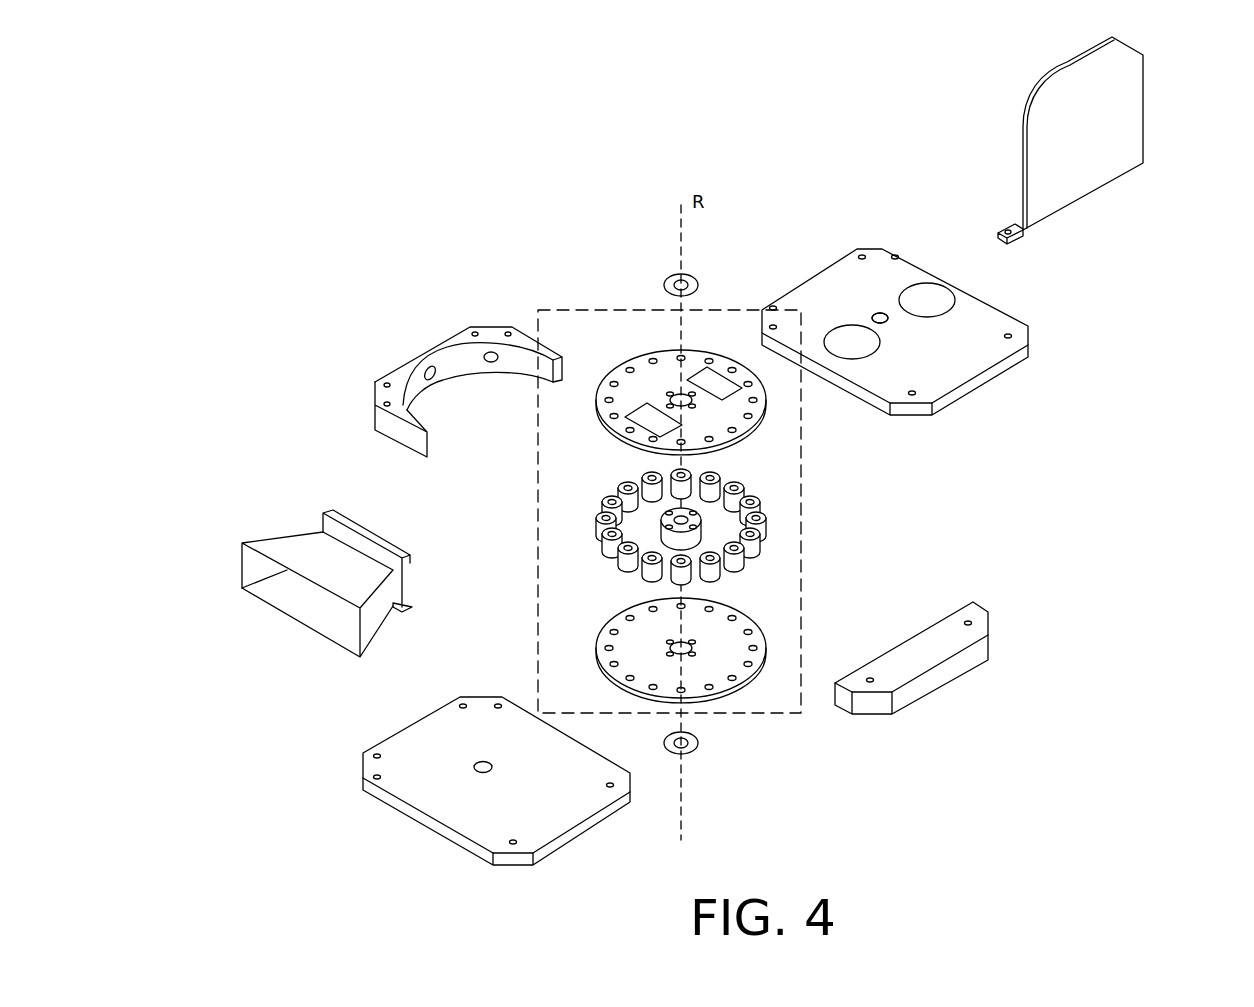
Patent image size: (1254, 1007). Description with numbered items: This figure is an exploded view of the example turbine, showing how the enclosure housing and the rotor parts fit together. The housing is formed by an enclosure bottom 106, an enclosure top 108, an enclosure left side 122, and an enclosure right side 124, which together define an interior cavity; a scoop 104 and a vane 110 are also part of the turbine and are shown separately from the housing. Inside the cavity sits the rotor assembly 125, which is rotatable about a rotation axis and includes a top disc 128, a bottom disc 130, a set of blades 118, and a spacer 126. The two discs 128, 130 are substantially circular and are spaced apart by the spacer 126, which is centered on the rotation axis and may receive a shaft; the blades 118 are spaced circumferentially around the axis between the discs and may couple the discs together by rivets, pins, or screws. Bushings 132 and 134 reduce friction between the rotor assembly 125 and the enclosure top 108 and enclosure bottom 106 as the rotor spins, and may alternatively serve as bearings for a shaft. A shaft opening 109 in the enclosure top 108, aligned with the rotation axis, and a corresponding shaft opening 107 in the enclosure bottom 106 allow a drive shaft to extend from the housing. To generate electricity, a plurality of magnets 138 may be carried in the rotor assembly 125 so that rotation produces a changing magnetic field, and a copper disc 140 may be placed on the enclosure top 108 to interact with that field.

The scoop 104 is at (242, 545).
The enclosure bottom 106 is at (385, 745).
The shaft opening 107 is at (481, 781).
The enclosure top 108 is at (985, 295).
The shaft opening 109 is at (895, 318).
The vane 110 is at (1143, 113).
The blades 118 is at (712, 516).
The enclosure left side 122 is at (375, 393).
The enclosure right side 124 is at (988, 637).
The rotor assembly 125 is at (537, 508).
The spacer 126 is at (663, 515).
The top disc 128 is at (628, 357).
The bottom disc 130 is at (620, 612).
The bushing 132 is at (700, 283).
The bushing 134 is at (699, 743).
The magnets 138 is at (682, 425).
The copper disc 140 is at (907, 288).